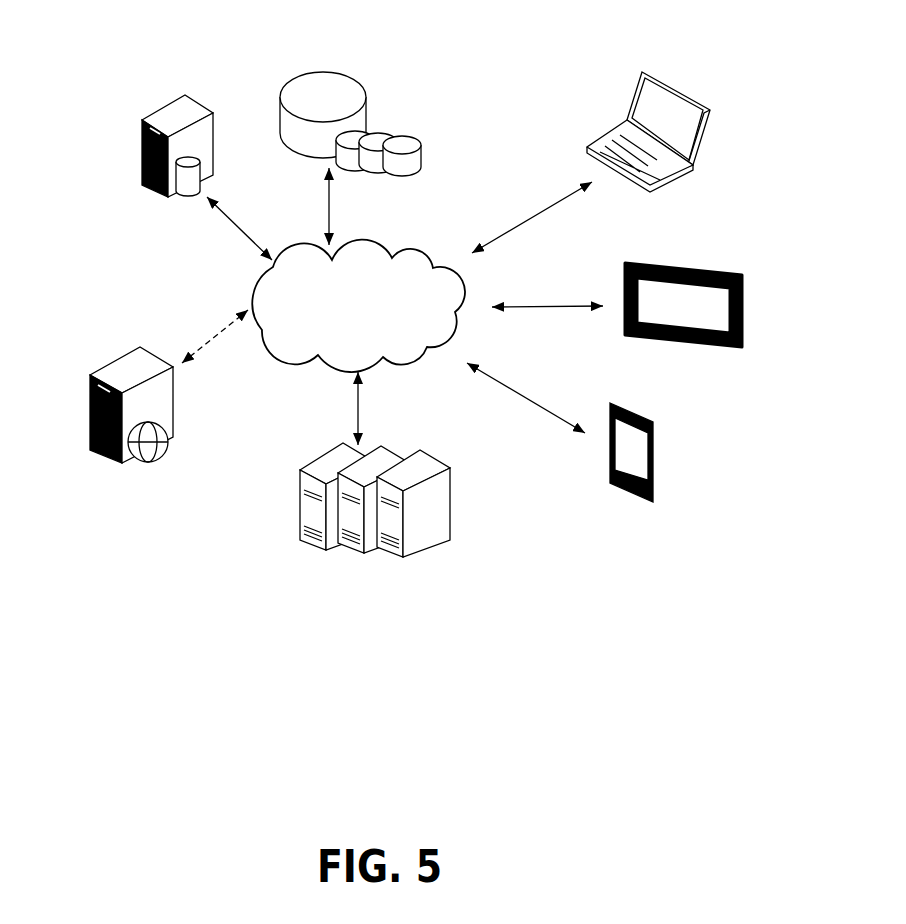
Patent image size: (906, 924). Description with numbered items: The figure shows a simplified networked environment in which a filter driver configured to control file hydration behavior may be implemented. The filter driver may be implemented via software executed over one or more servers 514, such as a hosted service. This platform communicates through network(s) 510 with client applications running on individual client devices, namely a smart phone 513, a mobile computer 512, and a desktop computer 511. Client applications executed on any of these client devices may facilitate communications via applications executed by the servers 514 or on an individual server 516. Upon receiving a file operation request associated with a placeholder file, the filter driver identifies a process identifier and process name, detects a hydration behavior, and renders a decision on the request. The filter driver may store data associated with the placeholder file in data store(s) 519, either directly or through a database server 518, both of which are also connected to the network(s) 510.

The network(s) 510 is at (363, 235).
The desktop computer 511 is at (680, 75).
The mobile computer 512 is at (713, 248).
The smart phone 513 is at (658, 422).
The servers 514 is at (328, 448).
The individual server 516 is at (112, 355).
The database server 518 is at (178, 203).
The data store(s) 519 is at (338, 53).